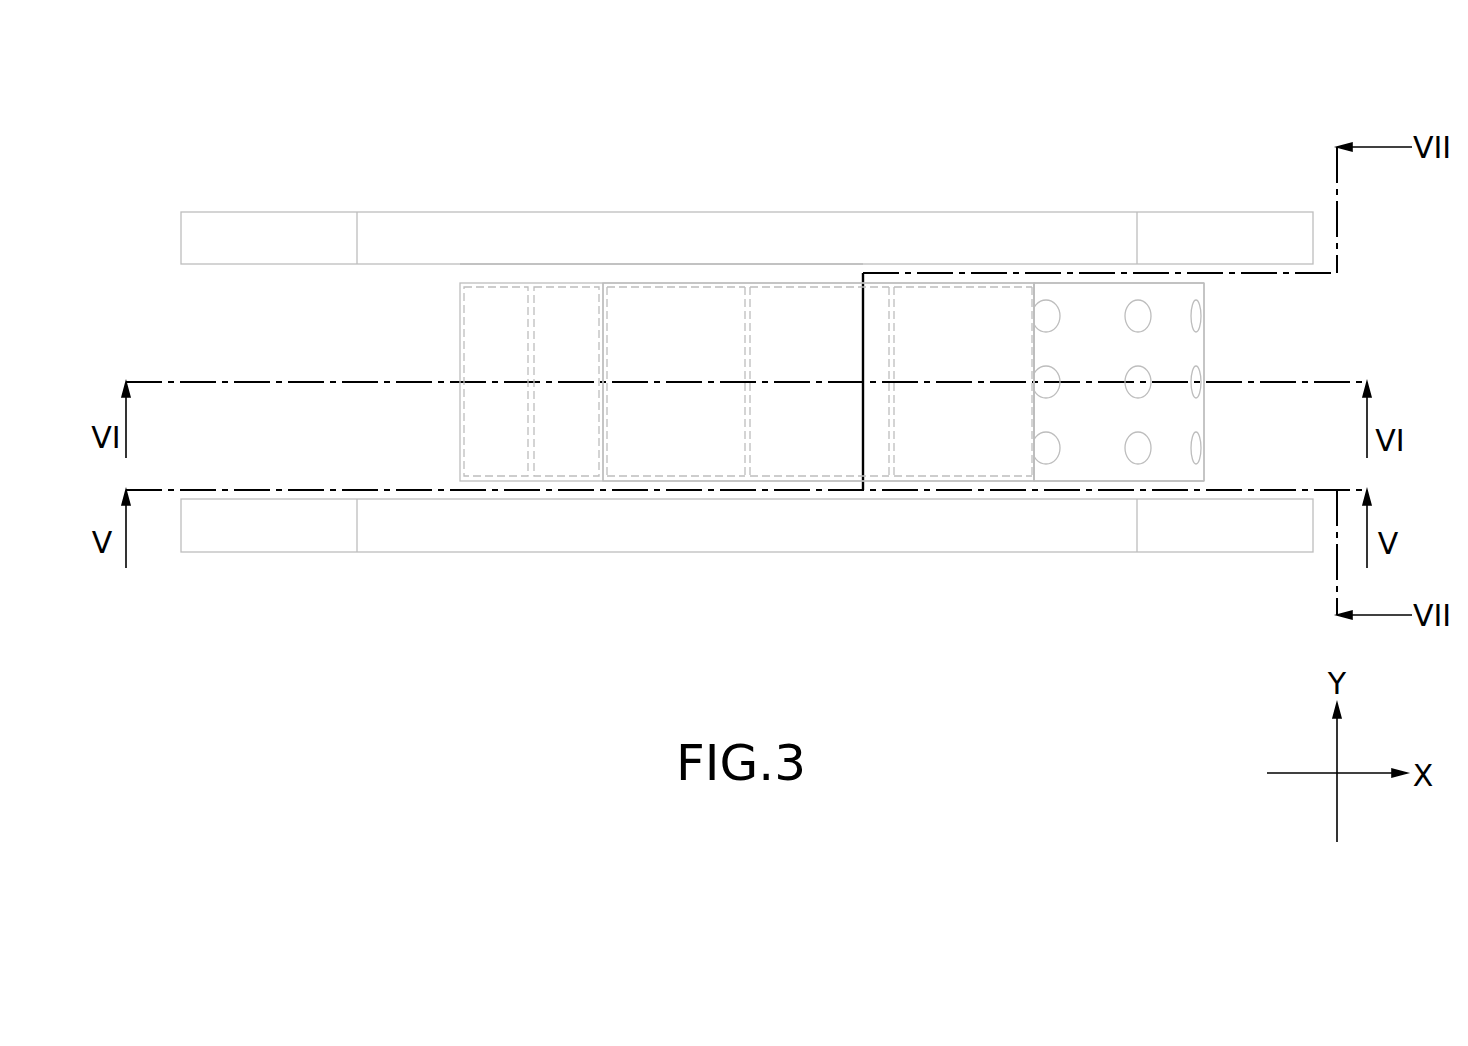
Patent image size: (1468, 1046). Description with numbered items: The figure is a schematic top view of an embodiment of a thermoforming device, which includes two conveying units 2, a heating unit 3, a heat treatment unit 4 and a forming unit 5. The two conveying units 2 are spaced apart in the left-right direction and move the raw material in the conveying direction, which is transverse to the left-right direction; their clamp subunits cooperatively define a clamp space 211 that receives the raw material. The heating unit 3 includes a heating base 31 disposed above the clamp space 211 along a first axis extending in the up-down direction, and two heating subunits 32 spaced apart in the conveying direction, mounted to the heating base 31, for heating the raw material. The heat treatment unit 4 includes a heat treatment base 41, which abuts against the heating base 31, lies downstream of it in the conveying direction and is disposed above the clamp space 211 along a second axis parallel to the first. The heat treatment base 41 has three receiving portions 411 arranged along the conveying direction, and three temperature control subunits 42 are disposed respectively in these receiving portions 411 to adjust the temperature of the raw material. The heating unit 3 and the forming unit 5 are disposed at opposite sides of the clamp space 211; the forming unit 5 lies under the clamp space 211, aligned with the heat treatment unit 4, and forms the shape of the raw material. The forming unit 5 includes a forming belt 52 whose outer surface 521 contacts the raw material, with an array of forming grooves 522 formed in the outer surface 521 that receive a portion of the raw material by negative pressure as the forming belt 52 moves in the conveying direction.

The conveying unit 2 is at (195, 200).
The clamp space 211 is at (600, 272).
The heating unit 3 is at (445, 331).
The heating base 31 is at (532, 285).
The heating subunit 32 is at (487, 302).
The heat treatment unit 4 is at (810, 272).
The heat treatment base 41 is at (748, 285).
The receiving portion 411 is at (681, 281).
The temperature control subunit 42 is at (680, 460).
The forming unit 5 is at (1254, 342).
The forming belt 52 is at (1188, 294).
The outer surface 521 is at (1186, 417).
The forming groove 522 is at (1197, 449).